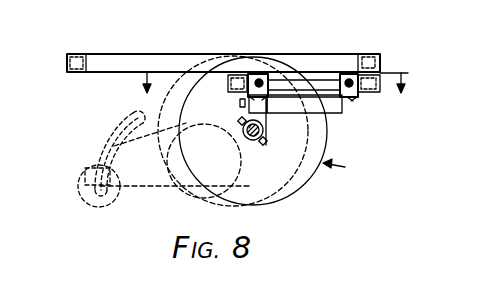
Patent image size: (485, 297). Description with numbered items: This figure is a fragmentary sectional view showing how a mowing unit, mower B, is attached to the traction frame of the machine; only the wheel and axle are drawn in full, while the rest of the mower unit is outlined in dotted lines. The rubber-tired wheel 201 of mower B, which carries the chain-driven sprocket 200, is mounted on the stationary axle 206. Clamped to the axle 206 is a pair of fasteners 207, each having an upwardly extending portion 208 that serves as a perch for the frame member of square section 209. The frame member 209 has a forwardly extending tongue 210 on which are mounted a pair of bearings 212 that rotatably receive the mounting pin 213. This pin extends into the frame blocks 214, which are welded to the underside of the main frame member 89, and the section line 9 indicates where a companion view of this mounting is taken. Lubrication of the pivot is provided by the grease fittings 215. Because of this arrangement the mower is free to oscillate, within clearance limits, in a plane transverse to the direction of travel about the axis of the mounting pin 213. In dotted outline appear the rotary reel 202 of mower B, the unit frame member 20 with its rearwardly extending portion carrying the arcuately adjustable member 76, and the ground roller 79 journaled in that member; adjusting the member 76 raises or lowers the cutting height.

The frame member 89 is at (162, 55).
The line 9- 9 is at (274, 85).
The frame member 20 is at (188, 103).
The arcuately adjustable member 76 is at (116, 122).
The ground roller 79 is at (100, 207).
The sprocket 200 is at (85, 163).
The wheel 201 is at (292, 196).
The rotary reel 202 is at (193, 203).
The axle 206 is at (253, 140).
The fasteners 207 is at (262, 140).
The upwardly extending portion 208 is at (240, 106).
The frame member of square section 209 is at (262, 100).
The tongue 210 is at (322, 106).
The bearings 212 is at (265, 74).
The mounting pin 213 is at (315, 80).
The frame blocks 214 is at (238, 75).
The grease fittings 215 is at (257, 74).
The mower B is at (340, 169).